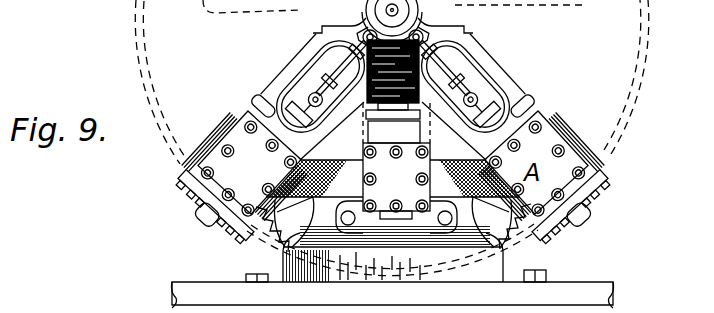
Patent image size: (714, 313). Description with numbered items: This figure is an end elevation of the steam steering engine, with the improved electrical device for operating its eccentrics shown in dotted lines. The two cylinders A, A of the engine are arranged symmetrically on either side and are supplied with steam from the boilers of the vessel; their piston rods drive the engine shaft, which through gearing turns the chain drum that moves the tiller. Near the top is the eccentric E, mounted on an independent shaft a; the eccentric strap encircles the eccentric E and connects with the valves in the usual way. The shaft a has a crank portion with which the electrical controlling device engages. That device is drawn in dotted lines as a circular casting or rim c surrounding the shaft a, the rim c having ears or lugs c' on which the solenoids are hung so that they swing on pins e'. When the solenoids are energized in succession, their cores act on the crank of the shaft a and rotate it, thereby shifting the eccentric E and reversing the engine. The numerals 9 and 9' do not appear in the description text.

The independent shaft a is at (386, 10).
The eccentric E is at (418, 9).
The pins e' is at (408, 11).
The ears or lugs c' is at (629, 15).
The circular casting or rim c is at (402, 138).
The cylinder 9 is at (382, 79).
The cylinder 9' is at (382, 79).
The cylinders A is at (237, 178).